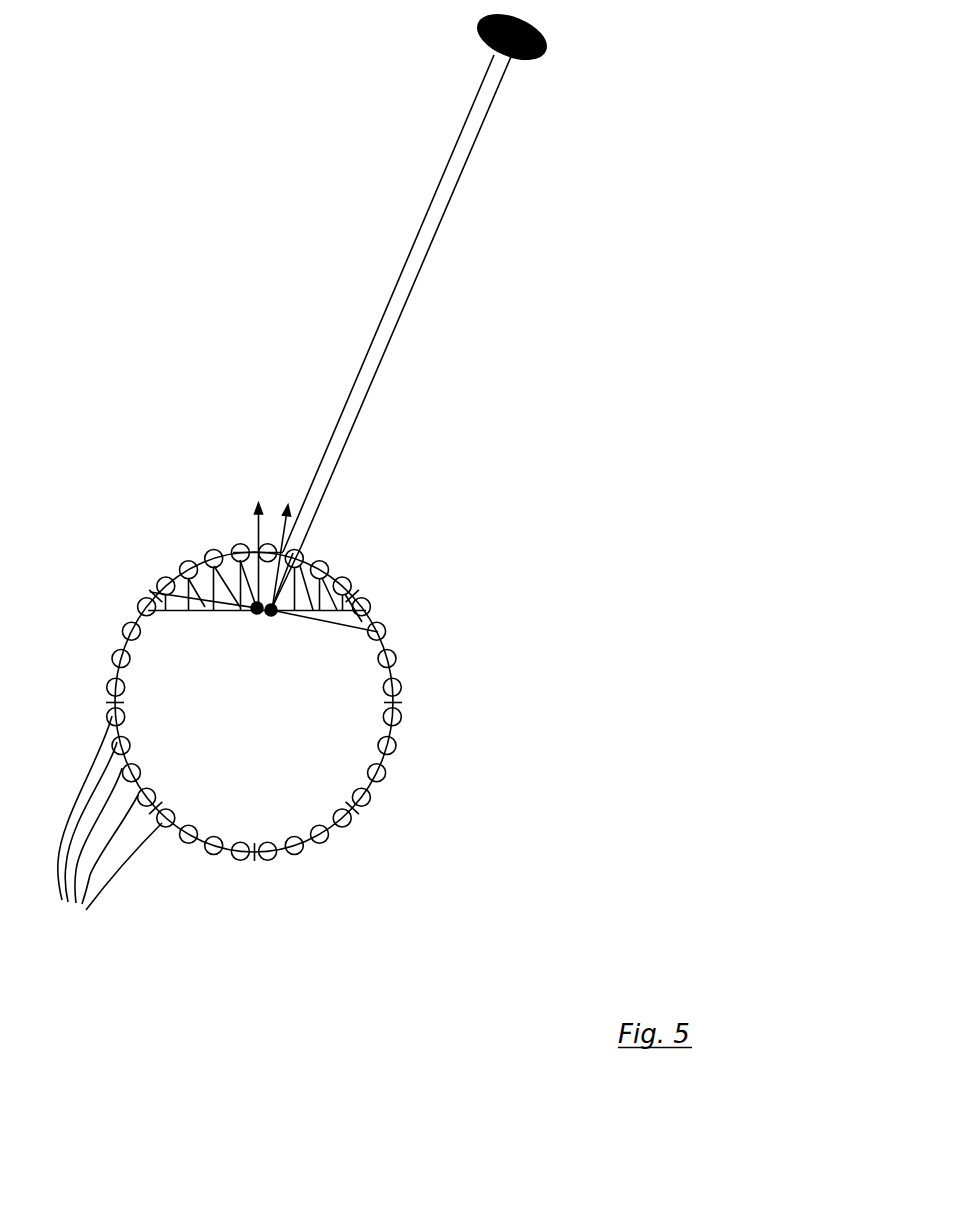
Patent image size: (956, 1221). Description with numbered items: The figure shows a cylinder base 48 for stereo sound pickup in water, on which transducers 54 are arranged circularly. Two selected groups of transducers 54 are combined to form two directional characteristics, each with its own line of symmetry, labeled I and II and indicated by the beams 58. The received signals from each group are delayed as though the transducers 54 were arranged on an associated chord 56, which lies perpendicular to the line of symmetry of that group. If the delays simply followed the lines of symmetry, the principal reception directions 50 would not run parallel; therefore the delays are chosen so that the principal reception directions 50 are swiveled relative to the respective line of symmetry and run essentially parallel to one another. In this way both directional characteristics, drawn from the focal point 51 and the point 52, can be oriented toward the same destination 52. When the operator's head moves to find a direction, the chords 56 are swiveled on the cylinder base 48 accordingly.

The cylinder base 48 is at (400, 705).
The principal reception directions 50 is at (413, 290).
The first focal point 51 is at (256, 611).
The destination 52 is at (547, 50).
The transducers 54 is at (107, 829).
The chord 56 is at (322, 622).
The ultrasound beams I and II 58 is at (283, 477).